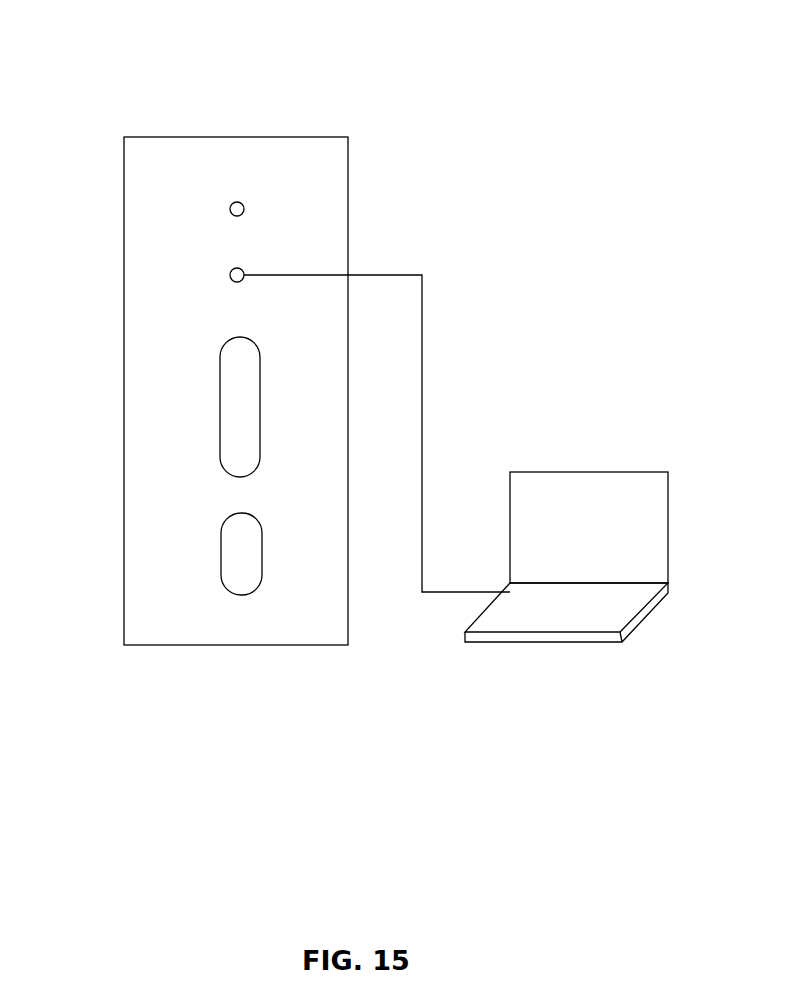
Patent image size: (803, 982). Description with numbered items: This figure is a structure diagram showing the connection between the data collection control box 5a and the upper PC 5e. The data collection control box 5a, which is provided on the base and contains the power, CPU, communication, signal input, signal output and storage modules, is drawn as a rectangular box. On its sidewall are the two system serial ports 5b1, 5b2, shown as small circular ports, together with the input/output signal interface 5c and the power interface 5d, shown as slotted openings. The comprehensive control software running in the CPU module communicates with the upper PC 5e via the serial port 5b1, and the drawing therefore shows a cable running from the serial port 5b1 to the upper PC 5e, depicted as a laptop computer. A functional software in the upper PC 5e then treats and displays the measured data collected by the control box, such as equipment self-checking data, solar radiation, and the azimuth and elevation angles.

The data collection control box 5a is at (185, 137).
The system serial port 5b1 is at (247, 267).
The system serial port 5b2 is at (243, 197).
The input/output signal interface 5c is at (222, 412).
The power interface 5d is at (218, 558).
The upper PC 5e is at (552, 472).